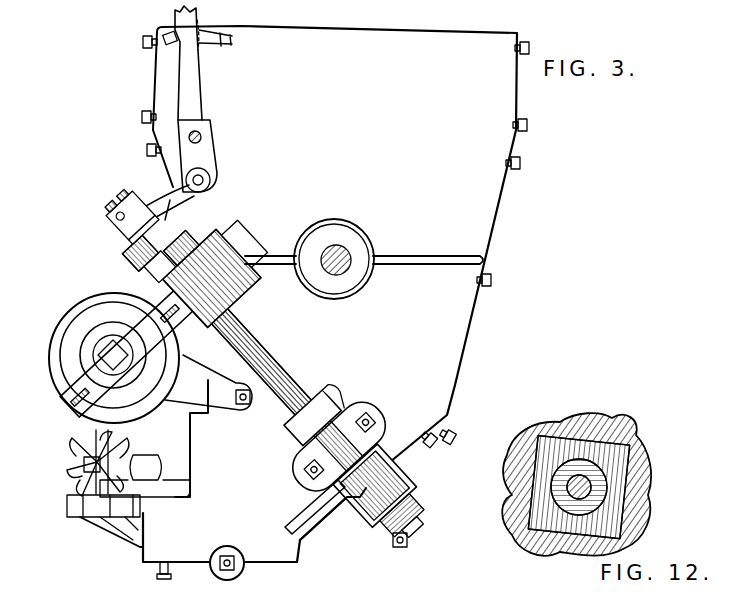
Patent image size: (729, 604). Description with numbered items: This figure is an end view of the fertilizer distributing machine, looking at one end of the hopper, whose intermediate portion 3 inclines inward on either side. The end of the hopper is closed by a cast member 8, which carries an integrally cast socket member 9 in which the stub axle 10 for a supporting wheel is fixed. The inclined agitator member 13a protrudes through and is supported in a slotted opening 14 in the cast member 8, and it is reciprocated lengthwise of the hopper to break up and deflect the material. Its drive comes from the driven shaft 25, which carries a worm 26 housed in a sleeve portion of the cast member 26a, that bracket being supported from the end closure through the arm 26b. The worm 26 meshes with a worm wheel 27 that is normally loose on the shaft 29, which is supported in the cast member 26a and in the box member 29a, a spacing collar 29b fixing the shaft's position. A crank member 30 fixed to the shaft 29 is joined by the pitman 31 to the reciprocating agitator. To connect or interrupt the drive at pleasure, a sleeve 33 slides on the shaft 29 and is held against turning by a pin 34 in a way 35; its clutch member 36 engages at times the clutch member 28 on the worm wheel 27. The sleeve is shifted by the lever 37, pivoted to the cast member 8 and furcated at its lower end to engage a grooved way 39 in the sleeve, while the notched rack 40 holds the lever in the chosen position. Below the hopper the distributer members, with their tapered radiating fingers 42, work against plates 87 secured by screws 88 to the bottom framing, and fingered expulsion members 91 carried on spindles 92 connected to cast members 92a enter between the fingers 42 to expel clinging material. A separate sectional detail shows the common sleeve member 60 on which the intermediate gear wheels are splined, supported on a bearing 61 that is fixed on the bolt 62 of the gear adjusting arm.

In FIG. 3, the intermediate portion of hopper 3 is at (172, 183).
In FIG. 3, the cast member 8 is at (408, 320).
In FIG. 3, the socket member 9 is at (356, 240).
In FIG. 3, the stub axle 10 is at (352, 258).
In FIG. 3, the agitator member 13a is at (287, 525).
In FIG. 3, the slotted opening 14 is at (305, 527).
In FIG. 3, the driven shaft 25 is at (118, 363).
In FIG. 3, the worm 26 is at (75, 368).
In FIG. 3, the cast member 26a is at (130, 350).
In FIG. 3, the arm 26b is at (212, 402).
In FIG. 3, the worm wheel 27 is at (232, 240).
In FIG. 3, the clutch member 28 is at (190, 250).
In FIG. 3, the shaft 29 is at (268, 360).
In FIG. 3, the box member 29a is at (375, 455).
In FIG. 3, the spacing collar 29b is at (324, 402).
In FIG. 3, the crank member 30 is at (365, 530).
In FIG. 3, the pitman 31 is at (378, 548).
In FIG. 3, the sleeve 33 is at (125, 232).
In FIG. 3, the pin 34 is at (118, 216).
In FIG. 3, the way 35 is at (135, 250).
In FIG. 3, the clutch member 36 is at (150, 262).
In FIG. 3, the lever 37 is at (196, 87).
In FIG. 3, the grooved way 39 is at (128, 252).
In FIG. 3, the notched rack 40 is at (167, 44).
In FIG. 3, the radiating fingers 42 is at (83, 520).
In FIG. 12, the sleeve member 60 is at (612, 472).
In FIG. 12, the bearing 61 is at (600, 492).
In FIG. 12, the bolt 62 is at (590, 470).
In FIG. 3, the plate 87 is at (113, 525).
In FIG. 3, the screws 88 is at (133, 542).
In FIG. 3, the expulsion member 91 is at (82, 454).
In FIG. 3, the spindle 92 is at (84, 470).
In FIG. 3, the cast member 92a is at (150, 462).